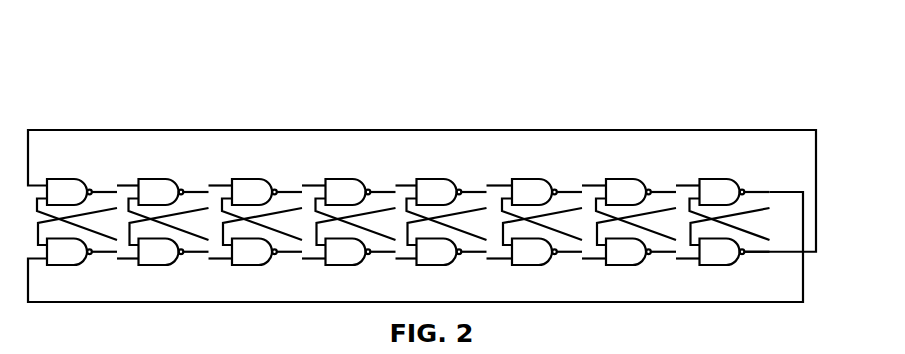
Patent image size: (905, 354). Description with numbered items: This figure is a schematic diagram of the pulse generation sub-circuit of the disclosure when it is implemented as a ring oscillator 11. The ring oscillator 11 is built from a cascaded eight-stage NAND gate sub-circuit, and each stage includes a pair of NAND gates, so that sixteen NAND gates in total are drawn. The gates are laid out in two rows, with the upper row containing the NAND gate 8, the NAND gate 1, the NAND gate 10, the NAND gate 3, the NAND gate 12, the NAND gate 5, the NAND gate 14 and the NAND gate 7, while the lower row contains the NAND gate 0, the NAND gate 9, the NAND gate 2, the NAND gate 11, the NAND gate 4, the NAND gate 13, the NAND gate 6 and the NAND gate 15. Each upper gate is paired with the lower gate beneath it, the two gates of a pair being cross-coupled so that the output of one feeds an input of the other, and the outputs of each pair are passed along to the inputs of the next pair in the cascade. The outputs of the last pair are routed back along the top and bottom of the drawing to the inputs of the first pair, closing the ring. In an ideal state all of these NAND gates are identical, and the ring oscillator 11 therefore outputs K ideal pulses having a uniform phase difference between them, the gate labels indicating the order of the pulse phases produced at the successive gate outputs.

The ring oscillator of cross-coupled NAND latch stages 11 is at (422, 161).
The NAND gate 0 is at (117, 240).
The NAND gate 1 is at (208, 208).
The NAND gate 2 is at (302, 240).
The NAND gate 3 is at (396, 208).
The NAND gate 4 is at (486, 240).
The NAND gate 5 is at (582, 208).
The NAND gate 6 is at (676, 240).
The NAND gate 7 is at (770, 208).
The NAND gate 8 is at (117, 208).
The NAND gate 9 is at (208, 240).
The NAND gate 10 is at (302, 208).
The NAND gate 12 is at (486, 208).
The NAND gate 13 is at (582, 240).
The NAND gate 14 is at (676, 208).
The NAND gate 15 is at (770, 240).